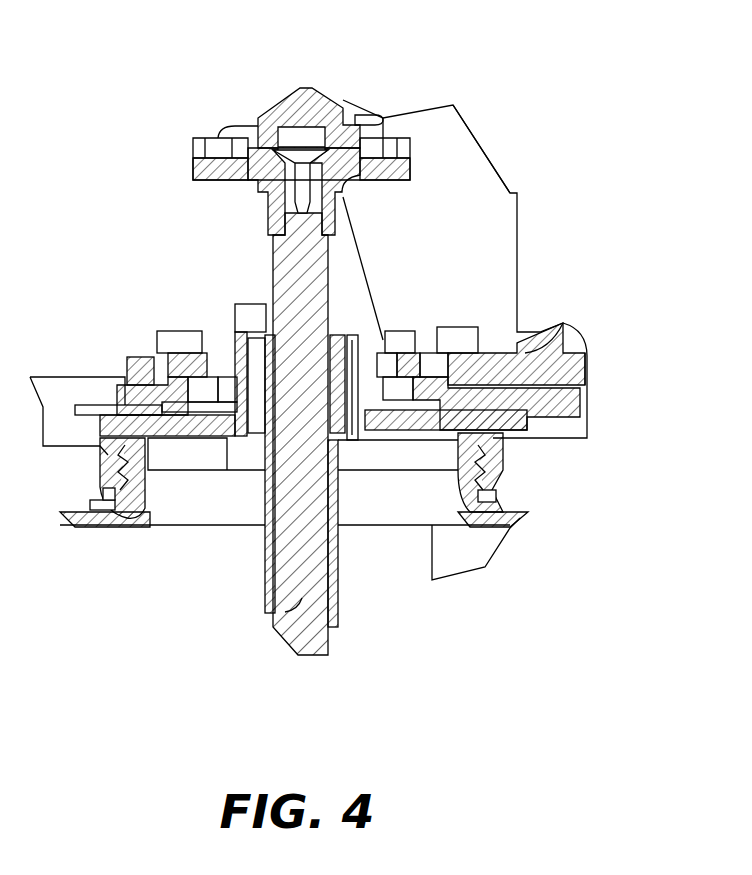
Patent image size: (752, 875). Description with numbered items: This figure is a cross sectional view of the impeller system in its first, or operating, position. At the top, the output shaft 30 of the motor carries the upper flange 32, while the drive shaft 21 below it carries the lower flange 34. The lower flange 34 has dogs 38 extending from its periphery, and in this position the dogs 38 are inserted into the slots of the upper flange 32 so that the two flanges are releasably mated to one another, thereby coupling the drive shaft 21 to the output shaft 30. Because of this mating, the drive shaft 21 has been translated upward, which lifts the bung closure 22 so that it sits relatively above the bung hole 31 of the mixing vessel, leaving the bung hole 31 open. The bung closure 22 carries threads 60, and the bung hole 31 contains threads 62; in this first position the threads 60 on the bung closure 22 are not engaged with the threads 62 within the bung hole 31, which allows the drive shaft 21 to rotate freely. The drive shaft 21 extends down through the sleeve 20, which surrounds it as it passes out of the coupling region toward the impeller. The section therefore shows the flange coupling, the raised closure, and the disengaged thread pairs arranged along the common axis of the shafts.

The sleeve 20 is at (267, 555).
The drive shaft 21 is at (275, 613).
The bung closure 22 is at (370, 350).
The output shaft 30 is at (300, 88).
The bung hole 31 is at (348, 470).
The upper flange 32 is at (410, 163).
The lower flange 34 is at (192, 147).
The dogs 38 is at (223, 130).
The threads 60 is at (236, 352).
The threads 62 is at (260, 481).